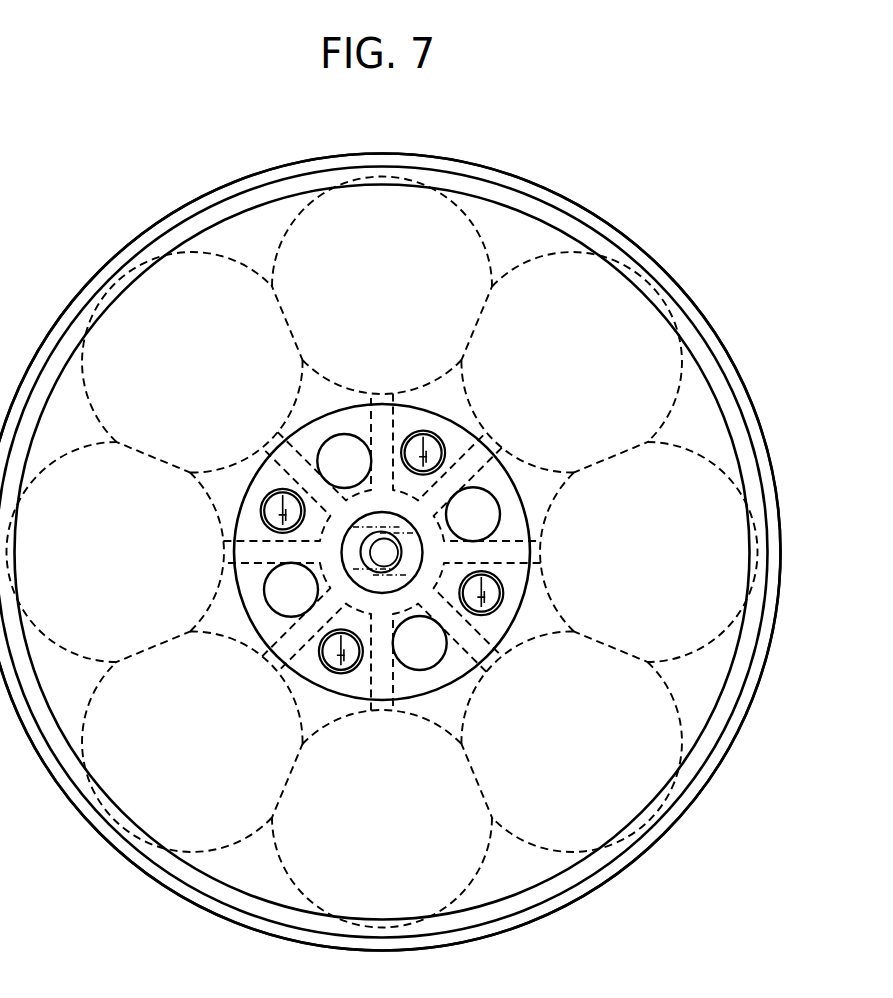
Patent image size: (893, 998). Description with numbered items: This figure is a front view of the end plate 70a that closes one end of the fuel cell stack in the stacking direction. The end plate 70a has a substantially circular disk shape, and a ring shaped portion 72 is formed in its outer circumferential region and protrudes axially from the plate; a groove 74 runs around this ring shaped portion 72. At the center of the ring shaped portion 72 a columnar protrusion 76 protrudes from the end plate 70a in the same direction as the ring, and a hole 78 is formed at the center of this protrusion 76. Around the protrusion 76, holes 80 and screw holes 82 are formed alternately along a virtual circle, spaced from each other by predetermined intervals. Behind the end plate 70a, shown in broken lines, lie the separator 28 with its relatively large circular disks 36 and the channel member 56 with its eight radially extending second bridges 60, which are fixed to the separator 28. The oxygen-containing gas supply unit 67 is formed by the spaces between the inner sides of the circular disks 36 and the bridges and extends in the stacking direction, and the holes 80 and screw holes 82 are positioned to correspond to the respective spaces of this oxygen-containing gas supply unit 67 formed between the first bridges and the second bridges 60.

The end plate 70a is at (637, 201).
The ring shaped portion 72 is at (160, 248).
The groove 74 is at (118, 268).
The separator 28 is at (708, 347).
The circular disk 36 is at (748, 541).
The oxygen-containing gas supply unit 67 is at (515, 448).
The second bridge 60 is at (513, 527).
The channel member 56 is at (402, 491).
The columnar protrusion 76 is at (419, 568).
The hole 78 is at (372, 571).
The hole 80 is at (417, 657).
The screw hole 82 is at (338, 663).